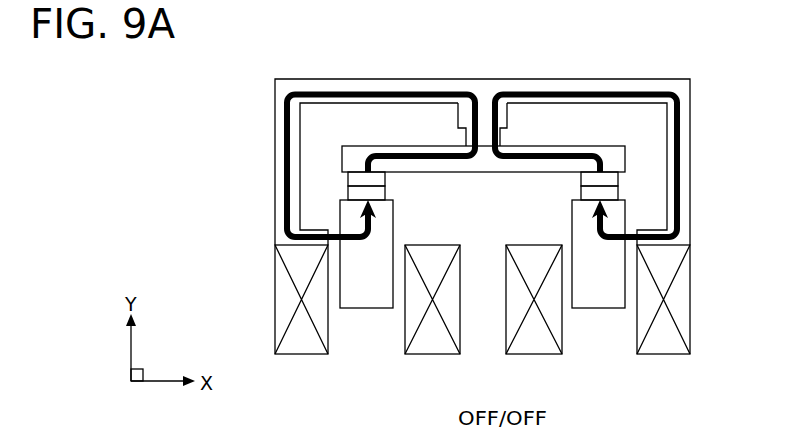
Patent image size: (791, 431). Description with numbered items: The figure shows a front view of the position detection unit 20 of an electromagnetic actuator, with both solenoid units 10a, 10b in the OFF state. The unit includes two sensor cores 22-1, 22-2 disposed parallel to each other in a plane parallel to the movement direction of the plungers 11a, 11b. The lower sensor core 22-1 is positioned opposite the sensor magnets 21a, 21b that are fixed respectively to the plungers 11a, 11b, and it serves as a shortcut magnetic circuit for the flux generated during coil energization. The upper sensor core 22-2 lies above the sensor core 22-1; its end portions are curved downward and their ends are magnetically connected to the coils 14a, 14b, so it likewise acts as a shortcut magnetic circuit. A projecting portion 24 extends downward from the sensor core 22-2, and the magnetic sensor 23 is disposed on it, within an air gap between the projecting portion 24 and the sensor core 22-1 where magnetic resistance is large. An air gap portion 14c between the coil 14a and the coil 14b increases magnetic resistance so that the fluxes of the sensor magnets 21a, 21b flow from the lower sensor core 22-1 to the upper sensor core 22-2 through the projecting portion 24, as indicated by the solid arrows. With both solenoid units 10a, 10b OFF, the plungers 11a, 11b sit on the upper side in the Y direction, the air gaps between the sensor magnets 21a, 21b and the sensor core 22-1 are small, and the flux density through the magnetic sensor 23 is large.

The position detection unit 20 is at (310, 70).
The sensor core 22-1 is at (598, 146).
The sensor core 22-2 is at (643, 79).
The magnetic sensor 23 is at (504, 130).
The projecting portion 24 is at (458, 118).
The sensor magnet 21a is at (348, 182).
The sensor magnet 21b is at (618, 179).
The plunger 11a is at (363, 302).
The plunger 11b is at (603, 302).
The solenoid unit 10a is at (259, 281).
The solenoid unit 10b is at (704, 290).
The coil 14a is at (298, 343).
The coil 14b is at (542, 353).
The air gap portion 14c is at (485, 338).